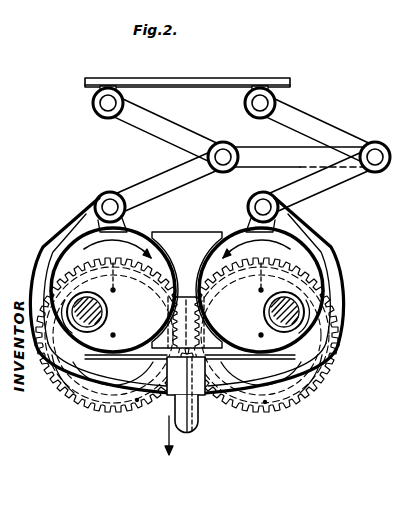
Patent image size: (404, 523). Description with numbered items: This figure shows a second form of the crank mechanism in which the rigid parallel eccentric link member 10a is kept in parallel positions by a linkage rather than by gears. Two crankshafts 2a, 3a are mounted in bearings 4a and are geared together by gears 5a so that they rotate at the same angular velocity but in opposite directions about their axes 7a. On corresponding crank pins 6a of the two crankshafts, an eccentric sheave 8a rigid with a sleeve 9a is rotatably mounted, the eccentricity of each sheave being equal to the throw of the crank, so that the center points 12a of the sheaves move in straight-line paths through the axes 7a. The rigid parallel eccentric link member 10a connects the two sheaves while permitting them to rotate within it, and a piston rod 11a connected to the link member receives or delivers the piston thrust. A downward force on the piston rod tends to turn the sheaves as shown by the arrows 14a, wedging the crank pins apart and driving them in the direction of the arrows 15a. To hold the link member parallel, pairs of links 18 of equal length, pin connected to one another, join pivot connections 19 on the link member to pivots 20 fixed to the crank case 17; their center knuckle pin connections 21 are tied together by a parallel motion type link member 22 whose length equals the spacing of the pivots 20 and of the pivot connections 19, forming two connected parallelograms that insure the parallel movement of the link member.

The crank case 17 is at (187, 73).
The pairs of links 18 is at (172, 170).
The pivot connections 19 is at (96, 204).
The pivots 20 is at (108, 103).
The center knuckle pin connections 21 is at (223, 157).
The parallel motion type link member 22 is at (265, 150).
The arrows 14a is at (176, 221).
The arrows 15a is at (58, 245).
The rigid parallel eccentric link member 10a is at (187, 224).
The center points 12a is at (128, 257).
The eccentric sheave 8a is at (78, 249).
The sleeve 9a is at (74, 290).
The crank pin 6a is at (107, 312).
The axis 7a is at (66, 388).
The bearing 4a is at (128, 397).
The crankshaft 3a is at (112, 381).
The crankshaft 2a is at (298, 398).
The gear 5a is at (137, 400).
The piston rod 11a is at (192, 417).